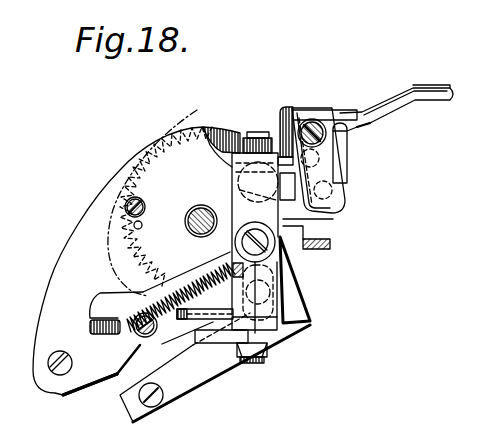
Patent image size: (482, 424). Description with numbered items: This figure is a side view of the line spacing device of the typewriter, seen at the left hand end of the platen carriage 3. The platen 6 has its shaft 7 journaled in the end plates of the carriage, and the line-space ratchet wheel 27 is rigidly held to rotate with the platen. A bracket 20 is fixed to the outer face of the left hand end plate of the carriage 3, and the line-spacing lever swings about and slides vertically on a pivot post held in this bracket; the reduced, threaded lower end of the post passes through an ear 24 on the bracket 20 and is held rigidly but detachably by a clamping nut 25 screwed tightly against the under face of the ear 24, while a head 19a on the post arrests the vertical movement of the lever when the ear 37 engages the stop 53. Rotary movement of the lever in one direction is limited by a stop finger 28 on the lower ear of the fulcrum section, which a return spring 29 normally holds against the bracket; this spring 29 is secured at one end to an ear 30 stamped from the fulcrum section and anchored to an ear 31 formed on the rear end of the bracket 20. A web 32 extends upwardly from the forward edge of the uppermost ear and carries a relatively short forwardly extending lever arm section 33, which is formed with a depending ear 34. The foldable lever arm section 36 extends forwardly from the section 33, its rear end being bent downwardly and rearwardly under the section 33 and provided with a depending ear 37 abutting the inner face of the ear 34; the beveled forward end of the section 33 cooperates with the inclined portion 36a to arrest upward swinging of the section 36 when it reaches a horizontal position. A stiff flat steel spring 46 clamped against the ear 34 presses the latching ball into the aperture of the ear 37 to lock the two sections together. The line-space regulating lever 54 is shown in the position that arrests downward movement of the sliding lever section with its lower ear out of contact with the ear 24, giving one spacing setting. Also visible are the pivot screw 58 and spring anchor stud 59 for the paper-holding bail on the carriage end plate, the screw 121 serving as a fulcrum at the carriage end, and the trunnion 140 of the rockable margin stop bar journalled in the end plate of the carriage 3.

The platen carriage 3 is at (195, 388).
The platen 6 is at (110, 220).
The shaft 7 is at (200, 206).
The head 19a is at (263, 122).
The bracket 20 is at (200, 273).
The ear 24 is at (235, 357).
The clamping nut 25 is at (268, 342).
The line-space ratchet wheel 27 is at (220, 130).
The stop finger 28 is at (182, 333).
The return spring 29 is at (138, 308).
The ear 30 is at (155, 229).
The ear 31 is at (88, 341).
The web 32 is at (286, 110).
The lever arm section 33 is at (345, 110).
The depending ear 34 is at (321, 110).
The foldable lever arm section 36 is at (433, 89).
The inclined portion 36a is at (369, 117).
The depending ear 37 is at (340, 146).
The flat steel spring 46 is at (328, 170).
The stop 53 is at (300, 250).
The line-space regulating lever 54 is at (331, 243).
The pivot screw 58 is at (127, 200).
The stud 59 is at (133, 227).
The screw 121 is at (120, 372).
The trunnion 140 is at (72, 362).